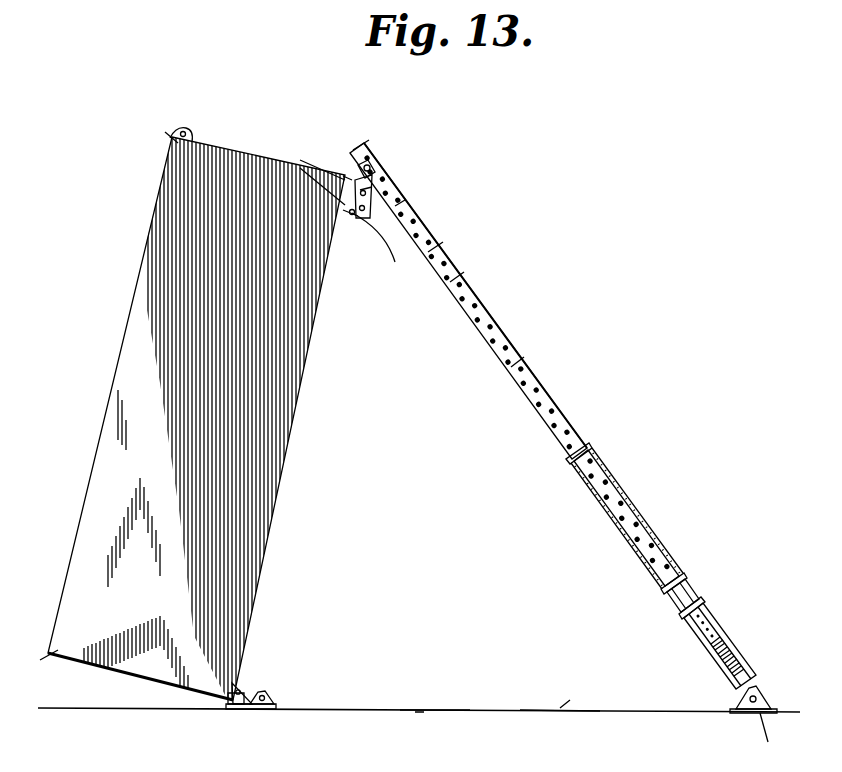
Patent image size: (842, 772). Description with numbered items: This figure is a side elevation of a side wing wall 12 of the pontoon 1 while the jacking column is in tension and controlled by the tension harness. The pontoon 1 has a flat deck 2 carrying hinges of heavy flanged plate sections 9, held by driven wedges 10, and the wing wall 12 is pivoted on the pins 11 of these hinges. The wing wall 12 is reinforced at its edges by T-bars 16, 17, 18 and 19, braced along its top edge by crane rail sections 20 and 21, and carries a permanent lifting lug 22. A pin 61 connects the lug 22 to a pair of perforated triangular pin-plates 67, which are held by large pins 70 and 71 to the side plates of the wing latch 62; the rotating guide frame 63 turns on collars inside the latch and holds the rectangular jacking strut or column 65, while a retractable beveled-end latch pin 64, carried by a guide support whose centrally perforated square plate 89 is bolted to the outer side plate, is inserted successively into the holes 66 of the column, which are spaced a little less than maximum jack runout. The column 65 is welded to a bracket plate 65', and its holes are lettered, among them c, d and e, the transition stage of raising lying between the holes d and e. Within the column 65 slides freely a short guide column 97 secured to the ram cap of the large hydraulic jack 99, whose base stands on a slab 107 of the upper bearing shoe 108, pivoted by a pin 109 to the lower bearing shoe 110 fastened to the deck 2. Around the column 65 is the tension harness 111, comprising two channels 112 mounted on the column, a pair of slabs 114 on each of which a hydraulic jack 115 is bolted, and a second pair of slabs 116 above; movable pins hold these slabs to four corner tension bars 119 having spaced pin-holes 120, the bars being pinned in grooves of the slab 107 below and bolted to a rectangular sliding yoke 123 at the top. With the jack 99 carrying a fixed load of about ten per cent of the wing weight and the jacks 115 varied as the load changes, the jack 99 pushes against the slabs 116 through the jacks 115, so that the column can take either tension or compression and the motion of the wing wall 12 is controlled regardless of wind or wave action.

The pontoon 1 is at (435, 698).
The flat deck 2 is at (560, 695).
The hinge of heavy flanged plate sections 9 is at (258, 707).
The driven wedge 10 is at (243, 708).
The pin 11 is at (256, 698).
The side wing wall 12 is at (285, 470).
The reinforcing T-bar 16 is at (228, 704).
The reinforcing T-bar 17 is at (49, 655).
The reinforcing T-bar 18 is at (172, 138).
The reinforcing T-bar 19 is at (342, 205).
The crane rail section 20 is at (180, 132).
The crane rail section 21 is at (350, 182).
The permanent lifting lug 22 is at (348, 216).
The pin 61 is at (342, 180).
The wing latch 62 is at (372, 195).
The rotating guide frame 63 is at (369, 165).
The retractable beveled-end latch pin 64 is at (375, 178).
The rectangular jacking strut or column 65 is at (468, 301).
The bracket plate 65' is at (731, 646).
The hole 66 is at (478, 338).
The perforated triangular pin-plate 67 is at (353, 214).
The large pin 70 is at (385, 249).
The large pin 71 is at (400, 206).
The centrally perforated square plate 89 is at (363, 148).
The guide column 97 is at (717, 650).
The large hydraulic jack 99 is at (739, 668).
The slab 107 is at (762, 681).
The upper bearing shoe 108 is at (745, 698).
The pin 109 is at (746, 712).
The lower bearing shoe 110 is at (768, 742).
The tension harness 111 is at (660, 546).
The channel 112 is at (704, 606).
The slab 114 is at (697, 600).
The hydraulic jack 115 is at (674, 605).
The slab 116 is at (667, 585).
The corner tension bar 119 is at (596, 500).
The pin-hole 120 is at (637, 510).
The rectangular sliding yoke 123 is at (592, 456).
The strut portion c is at (524, 350).
The hole d is at (448, 236).
The hole e is at (373, 171).